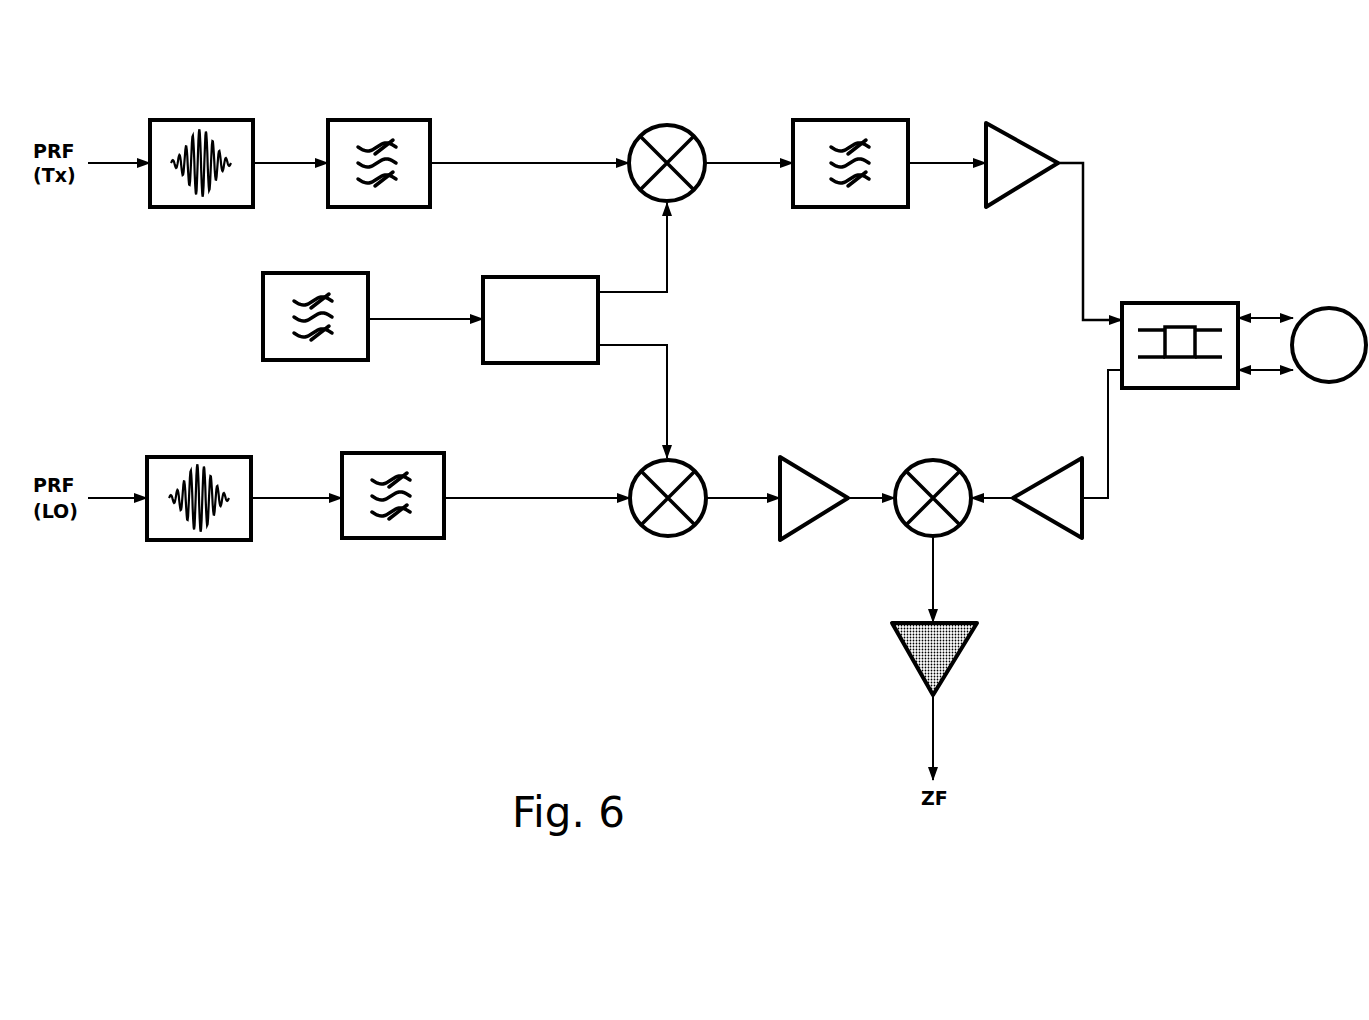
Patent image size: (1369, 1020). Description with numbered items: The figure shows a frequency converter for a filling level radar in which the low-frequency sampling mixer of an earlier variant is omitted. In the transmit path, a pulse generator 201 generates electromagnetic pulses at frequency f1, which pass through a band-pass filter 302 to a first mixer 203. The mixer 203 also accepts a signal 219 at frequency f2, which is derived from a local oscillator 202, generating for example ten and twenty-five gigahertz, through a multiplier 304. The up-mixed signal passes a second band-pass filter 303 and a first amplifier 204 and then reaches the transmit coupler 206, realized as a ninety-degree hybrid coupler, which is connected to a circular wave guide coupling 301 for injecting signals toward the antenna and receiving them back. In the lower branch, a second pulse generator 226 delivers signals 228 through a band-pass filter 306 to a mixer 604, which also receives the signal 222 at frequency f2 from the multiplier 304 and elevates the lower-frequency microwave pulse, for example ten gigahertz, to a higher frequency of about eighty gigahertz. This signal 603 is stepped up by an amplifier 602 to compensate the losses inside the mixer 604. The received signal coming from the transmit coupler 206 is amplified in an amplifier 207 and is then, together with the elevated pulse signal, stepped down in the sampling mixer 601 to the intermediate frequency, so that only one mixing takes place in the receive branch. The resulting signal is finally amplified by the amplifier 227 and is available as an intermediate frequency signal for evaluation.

The pulse generator 201 is at (201, 148).
The band-pass filter 302 is at (379, 148).
The first mixer 203 is at (667, 145).
The second band-pass filter 303 is at (850, 148).
The first amplifier 204 is at (1022, 148).
The local oscillator 202 is at (315, 303).
The multiplier 304 is at (540, 307).
The transmit coupler 206 is at (1180, 327).
The circular wave guide coupling 301 is at (1329, 327).
The pulse generator 226 is at (199, 483).
The band-pass filter 306 is at (393, 482).
The mixer 604 is at (668, 537).
The amplifier 602 is at (814, 483).
The sampling mixer 601 is at (933, 475).
The amplifier 207 is at (1047, 481).
The amplifier 227 is at (958, 659).
The signal 219 is at (667, 292).
The signal 222 is at (667, 372).
The signals 228 is at (543, 498).
The mixed LO signal 603 is at (740, 498).